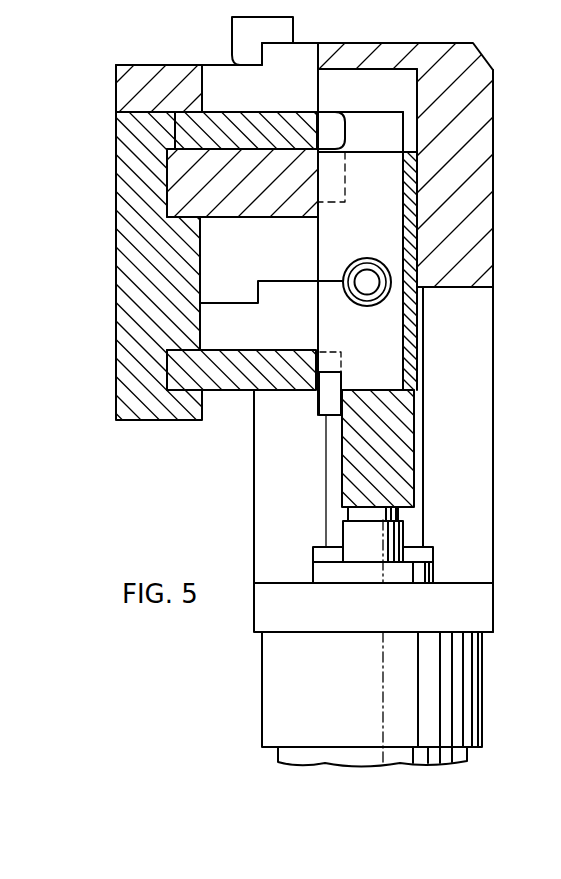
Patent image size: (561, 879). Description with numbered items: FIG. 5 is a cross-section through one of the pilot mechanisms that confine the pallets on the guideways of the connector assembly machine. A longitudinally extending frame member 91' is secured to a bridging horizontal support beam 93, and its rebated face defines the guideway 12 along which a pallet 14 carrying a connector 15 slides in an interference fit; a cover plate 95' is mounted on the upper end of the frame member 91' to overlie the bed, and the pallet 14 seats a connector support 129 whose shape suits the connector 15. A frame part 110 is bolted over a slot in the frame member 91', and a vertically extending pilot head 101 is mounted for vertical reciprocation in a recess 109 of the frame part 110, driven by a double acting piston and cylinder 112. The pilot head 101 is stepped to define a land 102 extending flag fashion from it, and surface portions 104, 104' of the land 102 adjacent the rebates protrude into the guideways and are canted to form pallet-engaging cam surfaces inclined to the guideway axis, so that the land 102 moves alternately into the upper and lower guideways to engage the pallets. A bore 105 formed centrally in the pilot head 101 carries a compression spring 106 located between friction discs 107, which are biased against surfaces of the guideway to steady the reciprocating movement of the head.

The guideway 12 is at (173, 137).
The pallet 14 is at (272, 113).
The connector 15 is at (236, 40).
The frame member 91' is at (280, 439).
The horizontal support beam 93 is at (197, 189).
The cover plate 95' is at (275, 439).
The pilot head 101 is at (408, 342).
The land 102 is at (357, 213).
The surface portion 104 is at (358, 177).
The surface portion 104' is at (303, 449).
The bore 105 is at (365, 308).
The compression spring 106 is at (368, 263).
The friction disc 107 is at (390, 287).
The recess 109 is at (403, 82).
The frame part 110 is at (487, 249).
The double acting piston and cylinder 112 is at (480, 702).
The connector support 129 is at (298, 53).